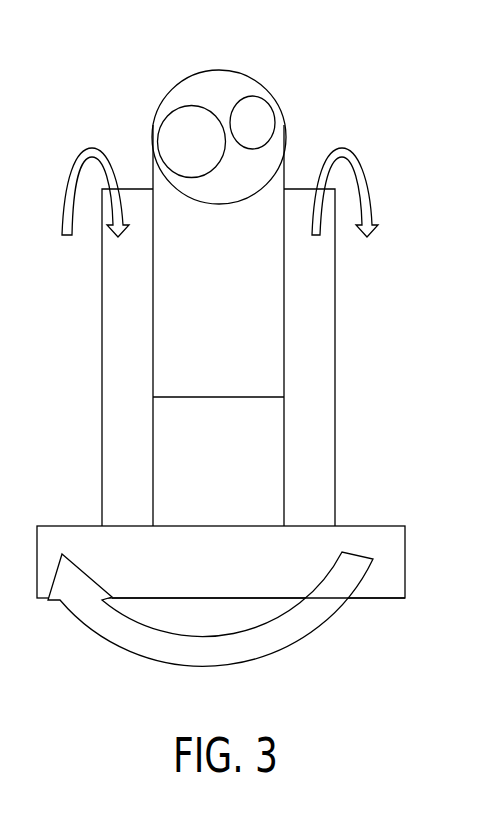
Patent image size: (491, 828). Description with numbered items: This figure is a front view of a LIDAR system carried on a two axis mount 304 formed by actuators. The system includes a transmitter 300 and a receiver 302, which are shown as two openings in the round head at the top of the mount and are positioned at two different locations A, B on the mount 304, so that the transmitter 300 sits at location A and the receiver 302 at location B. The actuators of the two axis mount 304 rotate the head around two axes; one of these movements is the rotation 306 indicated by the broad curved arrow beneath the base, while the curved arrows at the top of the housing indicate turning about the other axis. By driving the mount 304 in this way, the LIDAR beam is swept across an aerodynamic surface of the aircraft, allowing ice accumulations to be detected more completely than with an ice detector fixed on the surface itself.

The transmitter 300 is at (280, 120).
The receiver 302 is at (159, 121).
The two axis mount 304 is at (395, 329).
The rotation 306 is at (337, 625).
The location of transmitter A is at (188, 107).
The location of receiver B is at (255, 97).